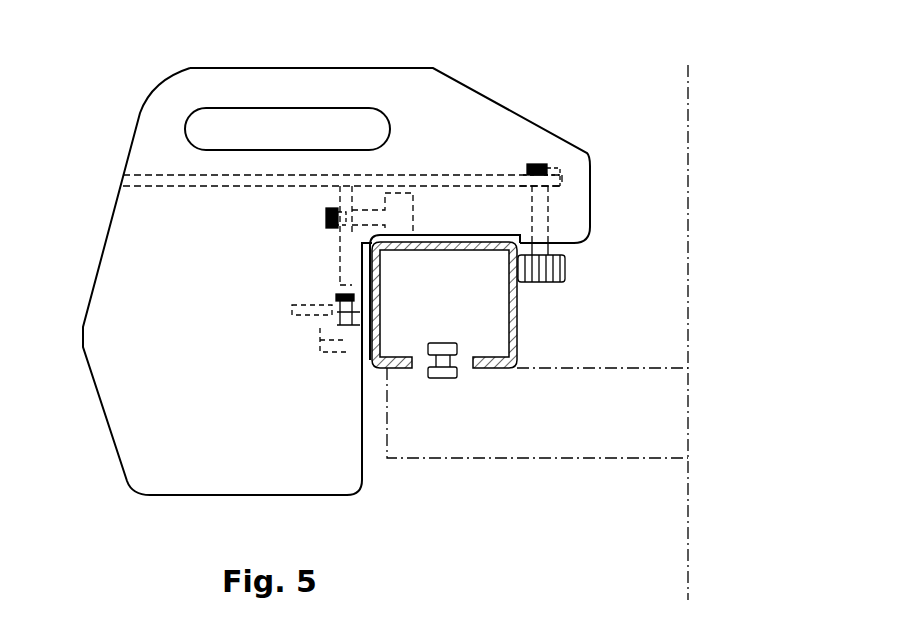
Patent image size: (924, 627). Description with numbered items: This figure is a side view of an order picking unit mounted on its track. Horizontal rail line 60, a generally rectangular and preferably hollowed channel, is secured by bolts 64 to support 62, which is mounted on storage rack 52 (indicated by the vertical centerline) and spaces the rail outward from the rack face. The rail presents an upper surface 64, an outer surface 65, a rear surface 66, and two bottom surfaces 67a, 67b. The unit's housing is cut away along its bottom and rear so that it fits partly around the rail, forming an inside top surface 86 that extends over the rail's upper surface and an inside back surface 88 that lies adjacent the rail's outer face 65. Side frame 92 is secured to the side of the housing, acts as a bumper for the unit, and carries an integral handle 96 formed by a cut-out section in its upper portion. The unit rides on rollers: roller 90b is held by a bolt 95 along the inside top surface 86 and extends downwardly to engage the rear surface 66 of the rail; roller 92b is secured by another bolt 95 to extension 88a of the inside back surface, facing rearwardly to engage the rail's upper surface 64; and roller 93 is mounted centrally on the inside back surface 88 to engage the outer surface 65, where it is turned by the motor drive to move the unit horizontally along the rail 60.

The storage rack 52 is at (688, 107).
The rail line 60 is at (517, 330).
The support 62 is at (540, 458).
The bolt 64 is at (470, 238).
The outer surface 65 is at (362, 360).
The rear surface 66 is at (519, 352).
The bottom surface 67a is at (405, 372).
The bottom surface 67b is at (490, 372).
The inside top surface 86 is at (468, 176).
The inside back surface 88 is at (370, 462).
The extension of inside back surface 88a is at (340, 258).
The roller 90b is at (566, 268).
The side frame 92 is at (127, 213).
The roller 92b is at (405, 193).
The roller 93 is at (320, 348).
The bolt 95 is at (565, 168).
The handle 96 is at (300, 120).